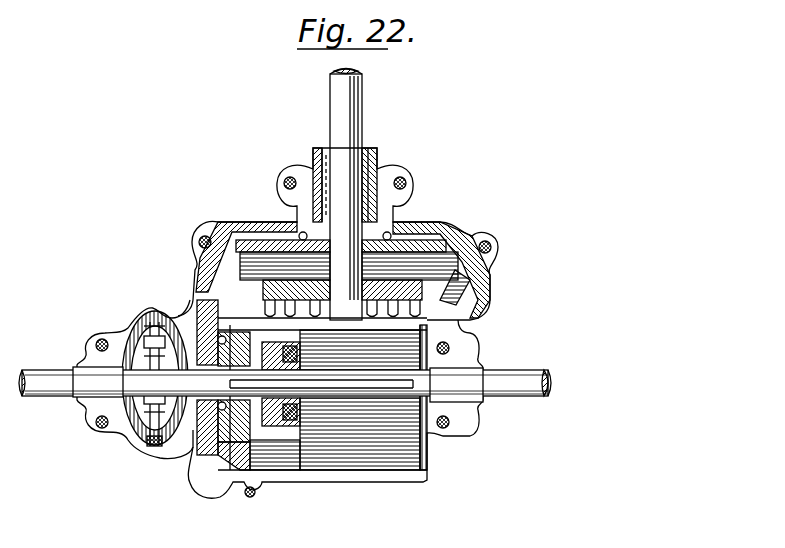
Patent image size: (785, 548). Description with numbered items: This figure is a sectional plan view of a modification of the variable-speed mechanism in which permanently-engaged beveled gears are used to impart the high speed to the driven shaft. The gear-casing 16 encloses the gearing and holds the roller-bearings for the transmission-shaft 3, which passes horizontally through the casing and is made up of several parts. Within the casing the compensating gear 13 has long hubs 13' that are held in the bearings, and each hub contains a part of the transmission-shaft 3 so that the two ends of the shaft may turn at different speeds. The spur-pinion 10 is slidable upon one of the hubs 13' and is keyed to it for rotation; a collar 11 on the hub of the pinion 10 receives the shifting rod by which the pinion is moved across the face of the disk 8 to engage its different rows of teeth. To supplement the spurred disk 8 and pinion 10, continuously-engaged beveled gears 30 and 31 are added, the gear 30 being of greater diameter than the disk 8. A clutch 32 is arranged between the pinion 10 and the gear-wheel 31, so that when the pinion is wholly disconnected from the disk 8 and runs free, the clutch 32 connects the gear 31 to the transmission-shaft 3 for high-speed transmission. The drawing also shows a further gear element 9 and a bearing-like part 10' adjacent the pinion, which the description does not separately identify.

The transmission-shaft 3 is at (513, 368).
The disk 8 is at (300, 290).
The bevel gear 9 is at (385, 300).
The spur-pinion 10 is at (200, 408).
The bearing 10' is at (228, 464).
The collar 11 is at (283, 352).
The compensating gear 13 is at (135, 379).
The hub 13' is at (321, 369).
The gear-casing 16 is at (335, 409).
The beveled gear 30 is at (453, 240).
The beveled gear-wheel 31 is at (195, 300).
The clutch 32 is at (220, 413).